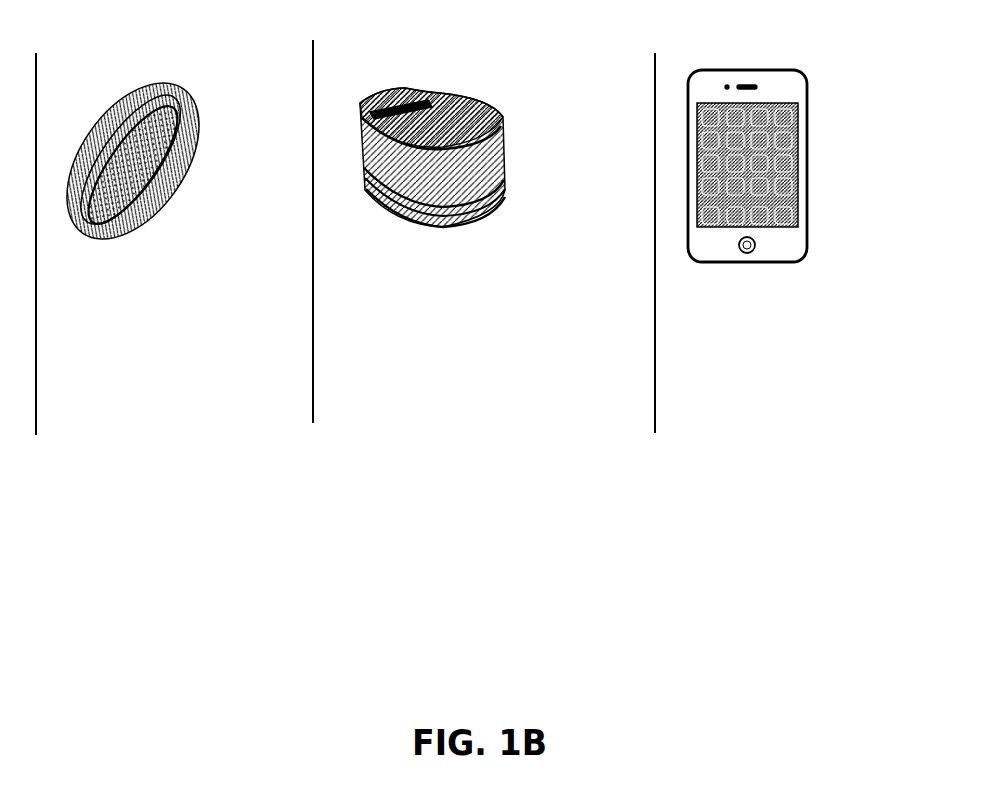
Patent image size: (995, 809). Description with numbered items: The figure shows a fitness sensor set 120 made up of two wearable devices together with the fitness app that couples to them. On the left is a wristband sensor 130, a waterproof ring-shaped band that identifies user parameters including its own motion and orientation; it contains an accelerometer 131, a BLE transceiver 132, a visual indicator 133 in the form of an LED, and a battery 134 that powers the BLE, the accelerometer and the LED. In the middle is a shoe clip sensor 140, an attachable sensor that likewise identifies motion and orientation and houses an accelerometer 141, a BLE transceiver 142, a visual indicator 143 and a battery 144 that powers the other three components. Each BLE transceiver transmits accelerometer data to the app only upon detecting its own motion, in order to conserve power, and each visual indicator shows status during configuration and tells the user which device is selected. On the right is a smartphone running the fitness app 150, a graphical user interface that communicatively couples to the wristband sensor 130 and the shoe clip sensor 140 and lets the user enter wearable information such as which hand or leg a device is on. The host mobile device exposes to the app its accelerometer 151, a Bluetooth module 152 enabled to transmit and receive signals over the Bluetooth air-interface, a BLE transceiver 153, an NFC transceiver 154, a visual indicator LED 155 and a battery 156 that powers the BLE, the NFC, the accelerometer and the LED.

The fitness sensor set 120 is at (505, 697).
The wristband sensor 130 is at (163, 80).
The accelerometer 131 is at (94, 329).
The BLE transceiver 132 is at (92, 360).
The visual indicator 133 is at (93, 391).
The battery 134 is at (113, 422).
The shoe clip sensor 140 is at (495, 112).
The accelerometer 141 is at (372, 315).
The BLE transceiver 142 is at (370, 345).
The visual indicator 143 is at (371, 376).
The battery 144 is at (391, 407).
The fitness app 150 is at (826, 113).
The accelerometer 151 is at (714, 329).
The Bluetooth module 152 is at (746, 359).
The BLE transceiver 153 is at (712, 389).
The NFC transceiver 154 is at (714, 420).
The visual indicator LED 155 is at (713, 451).
The battery 156 is at (733, 482).